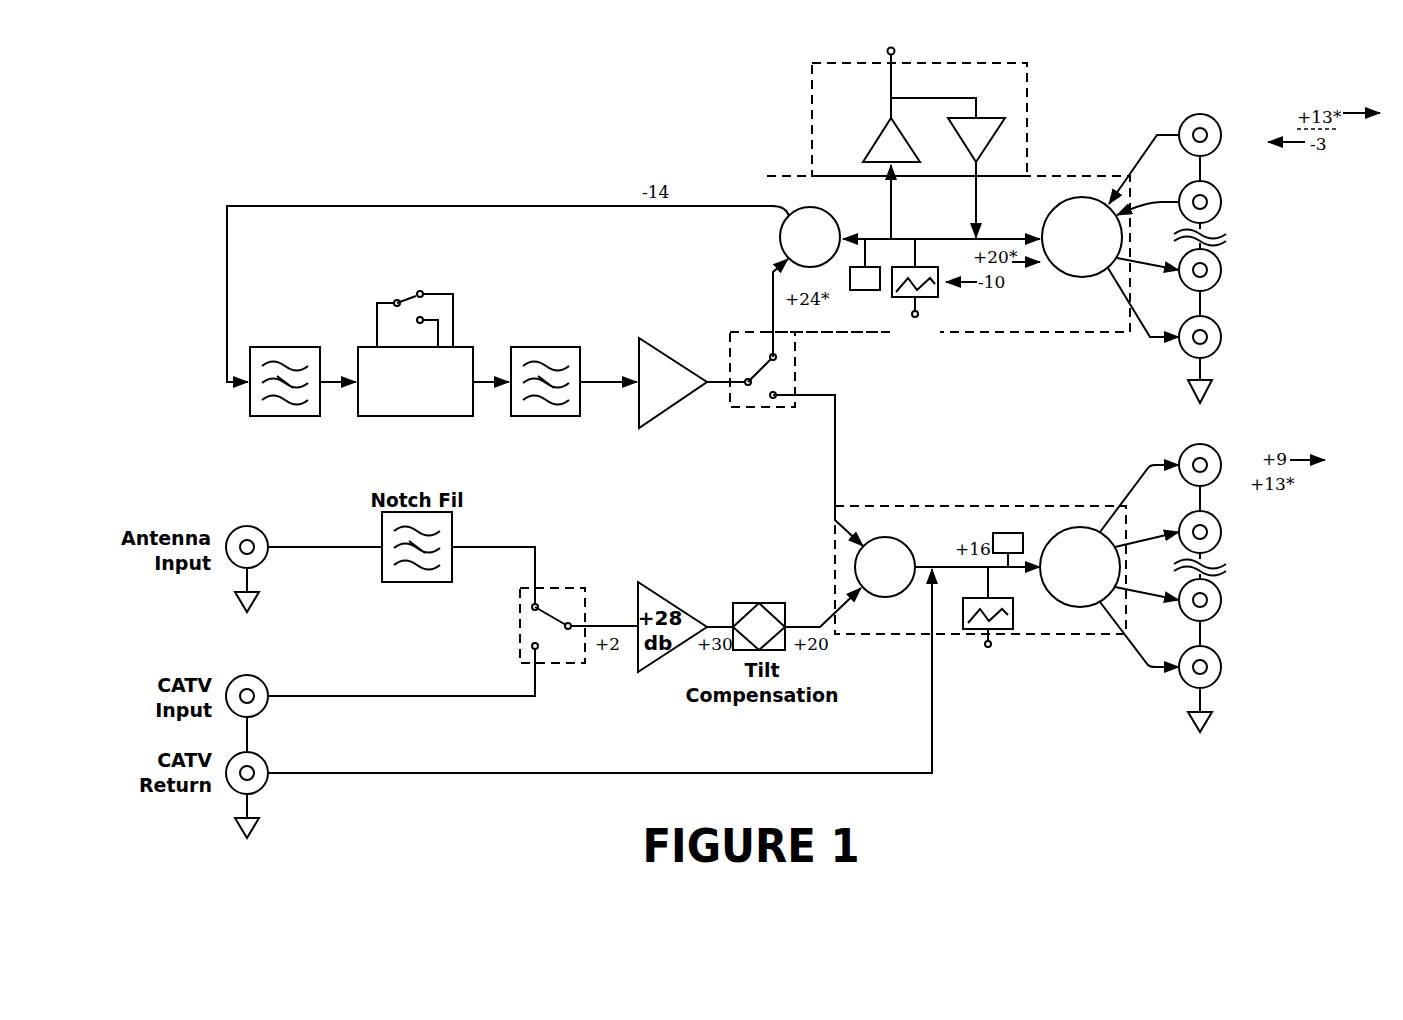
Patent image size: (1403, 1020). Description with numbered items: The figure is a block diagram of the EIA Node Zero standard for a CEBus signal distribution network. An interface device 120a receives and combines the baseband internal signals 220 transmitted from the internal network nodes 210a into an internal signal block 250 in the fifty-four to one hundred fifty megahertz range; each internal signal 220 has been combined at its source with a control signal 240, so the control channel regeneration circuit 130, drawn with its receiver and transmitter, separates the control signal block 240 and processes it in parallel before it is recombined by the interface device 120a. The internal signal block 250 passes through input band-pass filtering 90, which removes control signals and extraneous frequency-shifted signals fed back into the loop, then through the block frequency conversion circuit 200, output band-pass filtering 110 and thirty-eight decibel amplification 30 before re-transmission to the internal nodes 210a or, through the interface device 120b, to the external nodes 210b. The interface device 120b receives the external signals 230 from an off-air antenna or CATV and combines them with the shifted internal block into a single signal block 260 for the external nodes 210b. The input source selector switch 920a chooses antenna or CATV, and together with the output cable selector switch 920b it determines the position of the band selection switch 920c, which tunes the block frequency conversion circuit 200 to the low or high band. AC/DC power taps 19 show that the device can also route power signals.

The AC/DC power tap 19 is at (936, 403).
The amplification 30 is at (672, 371).
The input band-pass filtering 90 is at (287, 406).
The output band-pass filtering 110 is at (545, 406).
The interface device 120a is at (948, 269).
The interface device 120b is at (980, 577).
The control channel regeneration circuit 130 is at (847, 108).
The block frequency conversion circuit 200 is at (415, 407).
The internal network node 210a is at (1279, 263).
The external network node 210b is at (1278, 598).
The internal signal 220 is at (1145, 147).
The external signal 230 is at (823, 607).
The control signal 240 is at (922, 202).
The internal signal block 250 is at (690, 354).
The combined signal block 260 is at (731, 671).
The input source selector switch 920a is at (575, 602).
The output cable selector switch 920b is at (747, 419).
The band selection switch 920c is at (420, 301).